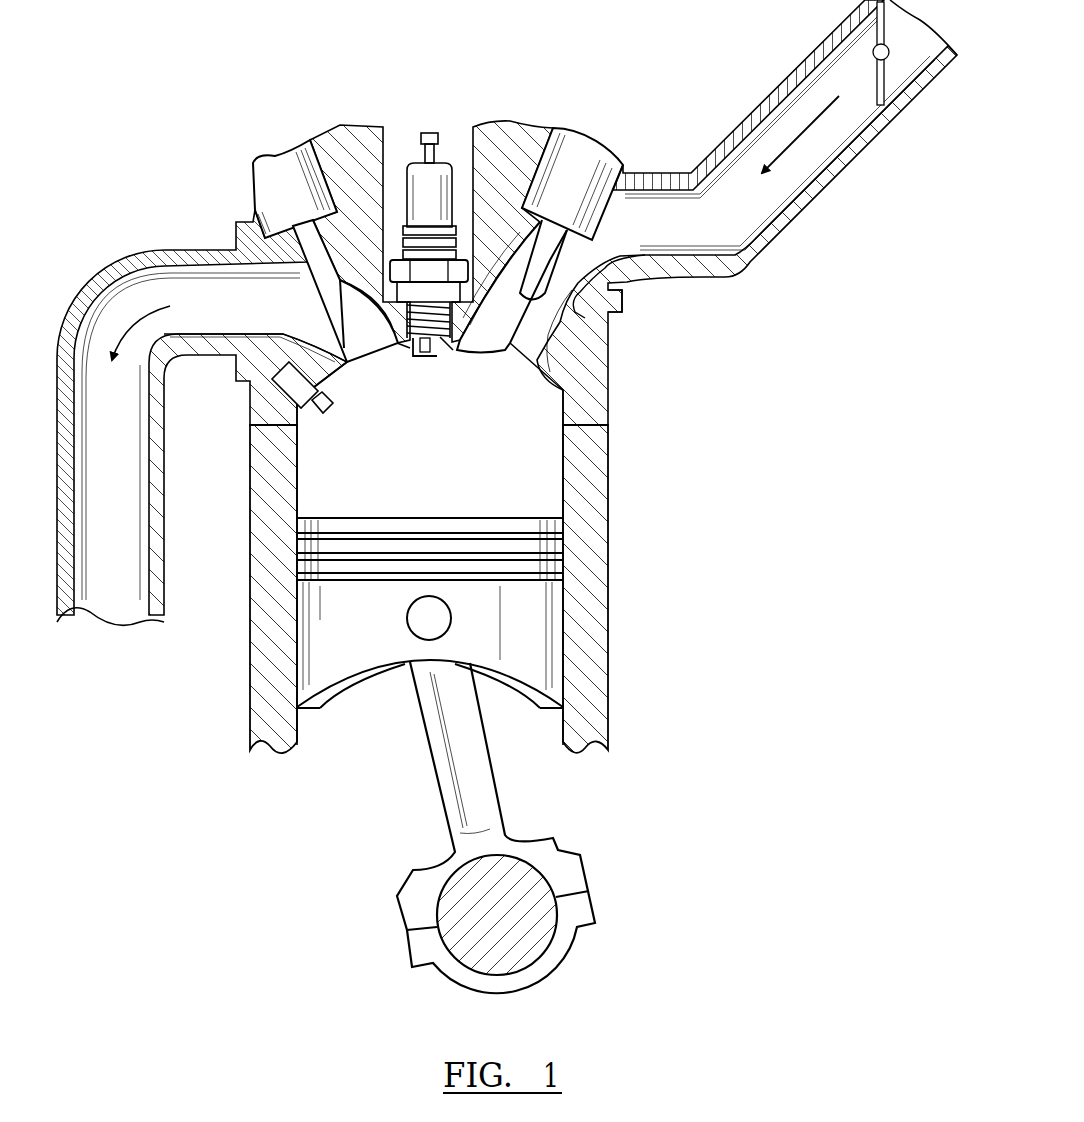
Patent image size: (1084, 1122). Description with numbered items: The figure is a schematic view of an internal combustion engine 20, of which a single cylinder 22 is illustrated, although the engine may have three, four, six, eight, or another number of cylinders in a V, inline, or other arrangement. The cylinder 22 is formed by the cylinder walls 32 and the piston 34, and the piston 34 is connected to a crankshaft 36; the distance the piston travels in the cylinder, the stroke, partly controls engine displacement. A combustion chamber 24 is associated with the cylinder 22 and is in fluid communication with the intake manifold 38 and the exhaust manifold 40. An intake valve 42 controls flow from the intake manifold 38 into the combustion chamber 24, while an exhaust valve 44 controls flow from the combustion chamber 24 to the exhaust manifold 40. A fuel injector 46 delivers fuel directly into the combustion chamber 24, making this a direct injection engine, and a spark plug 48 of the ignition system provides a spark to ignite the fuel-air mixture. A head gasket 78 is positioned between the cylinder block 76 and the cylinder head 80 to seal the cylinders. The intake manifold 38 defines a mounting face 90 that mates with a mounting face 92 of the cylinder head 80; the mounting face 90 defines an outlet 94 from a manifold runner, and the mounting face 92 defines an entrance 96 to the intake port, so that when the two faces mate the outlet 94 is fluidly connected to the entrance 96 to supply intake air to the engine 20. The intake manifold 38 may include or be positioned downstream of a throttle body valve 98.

The internal combustion engine 20 is at (130, 150).
The cylinder 22 is at (385, 448).
The combustion chamber 24 is at (483, 462).
The cylinder walls 32 is at (608, 508).
The piston 34 is at (477, 640).
The crankshaft 36 is at (435, 895).
The intake manifold 38 is at (706, 104).
The exhaust manifold 40 is at (114, 254).
The intake valve 42 is at (525, 360).
The exhaust valve 44 is at (333, 318).
The fuel injector 46 is at (273, 386).
The spark plug 48 is at (443, 162).
The cylinder block 76 is at (608, 627).
The head gasket 78 is at (250, 425).
The cylinder head 80 is at (608, 410).
The mounting face 90 is at (674, 306).
The mounting face 92 is at (622, 287).
The outlet 94 is at (623, 258).
The entrance 96 is at (576, 292).
The throttle body valve 98 is at (884, 80).